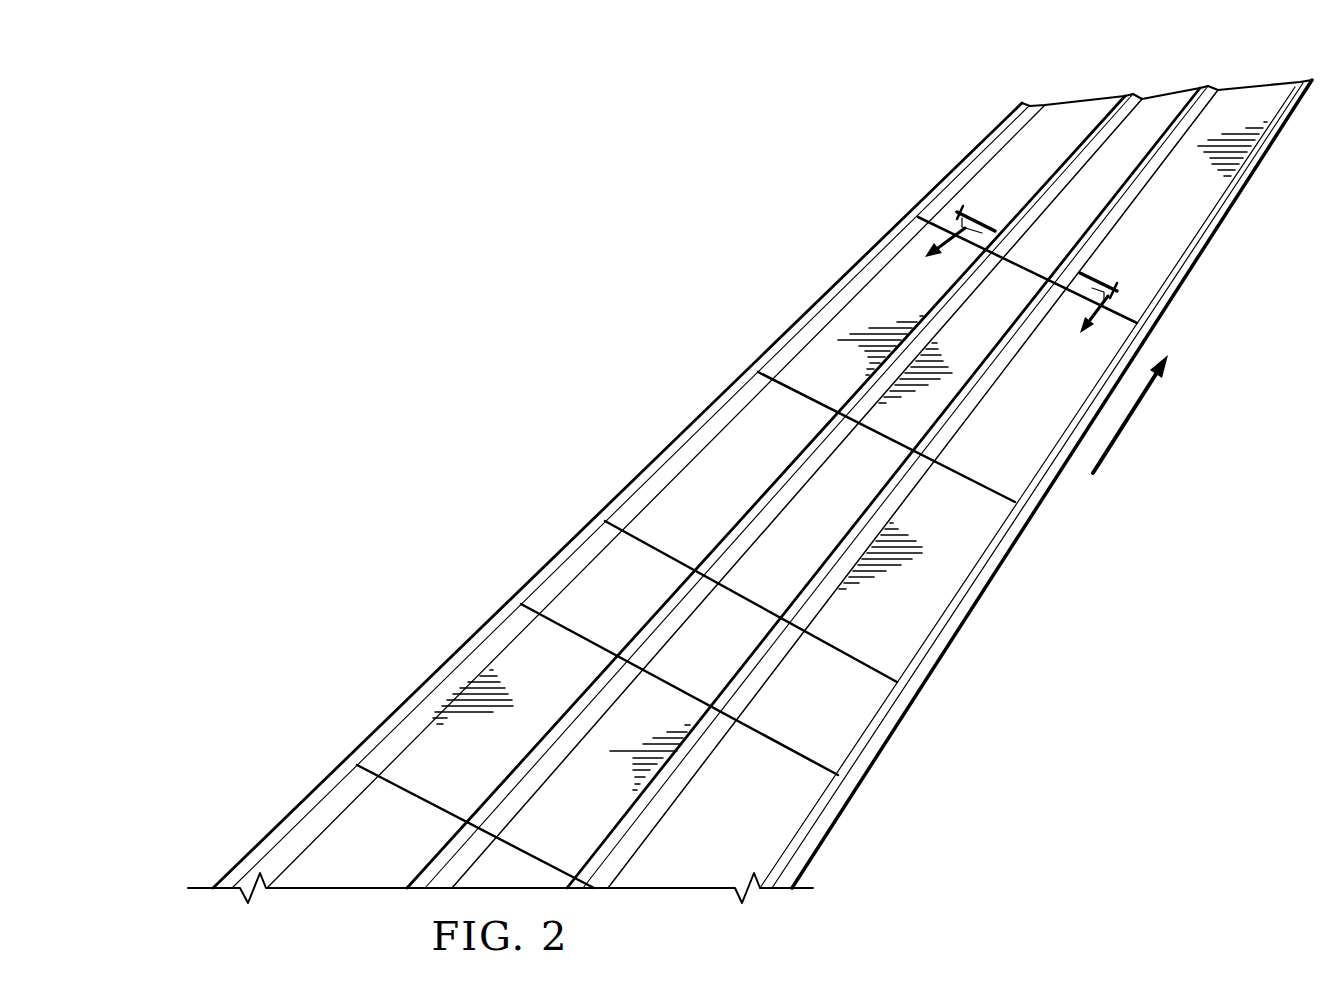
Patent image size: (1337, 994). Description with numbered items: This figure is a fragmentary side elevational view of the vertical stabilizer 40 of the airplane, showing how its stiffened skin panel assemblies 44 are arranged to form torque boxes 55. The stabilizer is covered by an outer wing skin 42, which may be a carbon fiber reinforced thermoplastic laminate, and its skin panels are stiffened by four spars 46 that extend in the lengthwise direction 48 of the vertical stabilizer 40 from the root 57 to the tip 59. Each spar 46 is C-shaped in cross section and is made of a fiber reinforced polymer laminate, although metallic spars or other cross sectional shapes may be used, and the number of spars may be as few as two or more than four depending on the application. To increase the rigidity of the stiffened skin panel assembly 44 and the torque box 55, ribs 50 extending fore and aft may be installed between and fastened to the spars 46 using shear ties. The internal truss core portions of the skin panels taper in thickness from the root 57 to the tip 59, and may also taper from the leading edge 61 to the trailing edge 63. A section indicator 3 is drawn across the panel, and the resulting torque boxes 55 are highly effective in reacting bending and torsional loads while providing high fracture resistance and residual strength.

The vertical stabilizer 40 is at (1157, 208).
The outer wing skin 42 is at (596, 758).
The stiffened skin panel assembly 44 is at (707, 478).
The spar 46 is at (797, 467).
The lengthwise direction 48 is at (1130, 423).
The rib 50 is at (1113, 305).
The torque box 55 is at (967, 145).
The root 57 is at (233, 847).
The tip 59 is at (1060, 92).
The leading edge 61 is at (737, 380).
The trailing edge 63 is at (900, 724).
The section line for FIG. 3 is at (1011, 282).